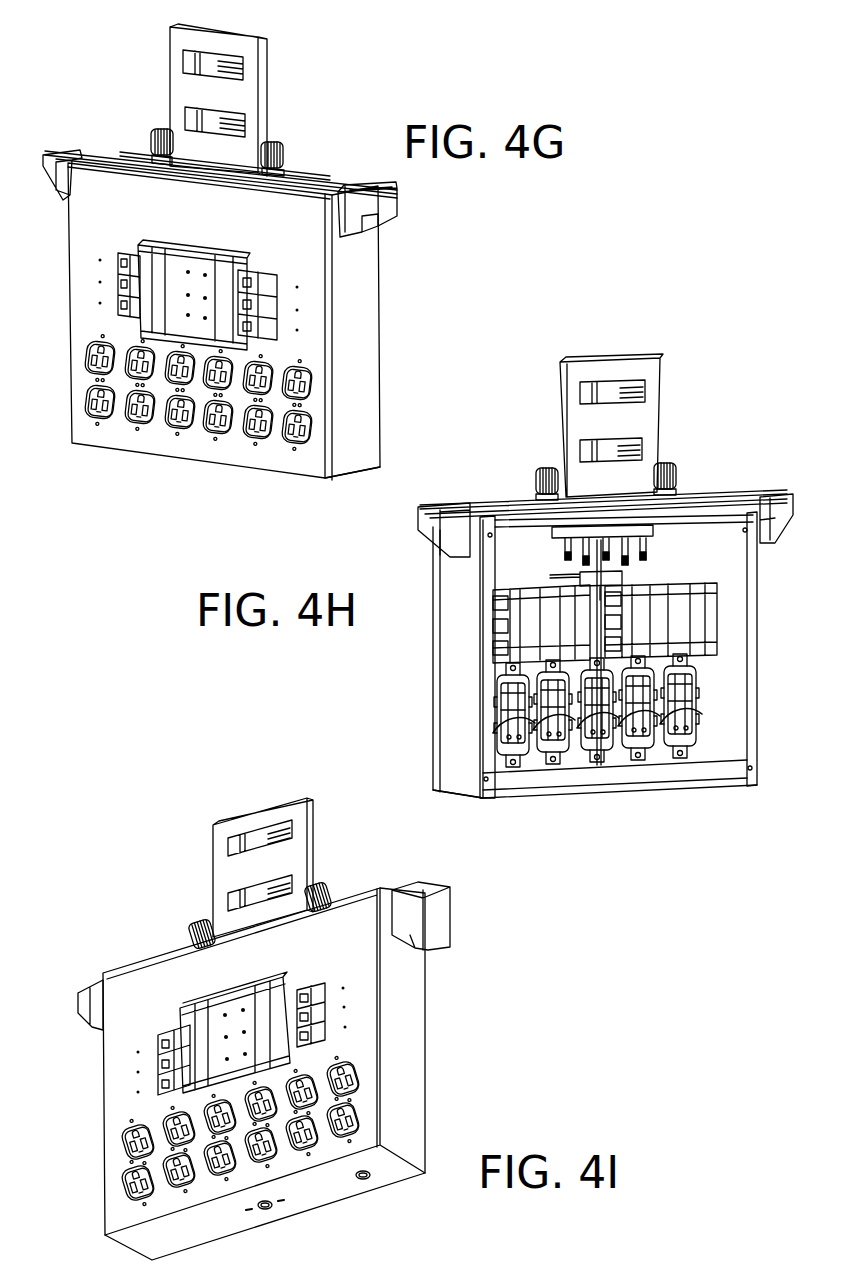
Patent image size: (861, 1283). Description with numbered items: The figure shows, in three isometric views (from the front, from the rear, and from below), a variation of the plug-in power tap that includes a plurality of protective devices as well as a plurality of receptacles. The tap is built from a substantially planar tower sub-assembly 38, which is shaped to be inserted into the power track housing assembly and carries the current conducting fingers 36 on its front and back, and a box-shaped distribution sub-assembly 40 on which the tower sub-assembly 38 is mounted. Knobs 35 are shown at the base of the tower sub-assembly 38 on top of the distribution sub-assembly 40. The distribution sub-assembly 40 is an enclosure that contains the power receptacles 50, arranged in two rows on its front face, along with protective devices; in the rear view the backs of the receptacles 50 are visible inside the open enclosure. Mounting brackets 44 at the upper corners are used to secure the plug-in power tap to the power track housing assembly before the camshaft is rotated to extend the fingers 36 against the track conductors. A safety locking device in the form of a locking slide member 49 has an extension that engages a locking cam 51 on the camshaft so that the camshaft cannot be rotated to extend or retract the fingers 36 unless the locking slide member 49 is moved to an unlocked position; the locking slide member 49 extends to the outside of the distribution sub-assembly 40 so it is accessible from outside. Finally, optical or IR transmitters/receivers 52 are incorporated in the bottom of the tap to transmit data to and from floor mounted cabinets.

In FIG. 4G, the thumb screw knob 35 is at (158, 130).
In FIG. 4H, the thumb screw knob 35 is at (545, 468).
In FIG. 4I, the thumb screw knob 35 is at (197, 926).
In FIG. 4G, the current conducting fingers 36 is at (233, 115).
In FIG. 4H, the current conducting fingers 36 is at (633, 437).
In FIG. 4I, the current conducting fingers 36 is at (277, 880).
In FIG. 4G, the tower sub-assembly 38 is at (182, 83).
In FIG. 4H, the tower sub-assembly 38 is at (580, 415).
In FIG. 4I, the tower sub-assembly 38 is at (223, 875).
In FIG. 4G, the distribution sub-assembly 40 is at (360, 345).
In FIG. 4H, the distribution sub-assembly 40 is at (455, 660).
In FIG. 4I, the distribution sub-assembly 40 is at (398, 1010).
In FIG. 4G, the mounting bracket 44 is at (63, 198).
In FIG. 4H, the mounting bracket 44 is at (452, 502).
In FIG. 4I, the mounting bracket 44 is at (92, 1000).
In FIG. 4G, the locking slide member 49 is at (135, 257).
In FIG. 4H, the locking slide member 49 is at (580, 575).
In FIG. 4G, the receptacles 50 is at (88, 393).
In FIG. 4H, the receptacles 50 is at (488, 732).
In FIG. 4I, the receptacles 50 is at (363, 1110).
In FIG. 4H, the locking cam 51 is at (622, 580).
In FIG. 4I, the optical or IR transmitters/receivers 52 is at (372, 1180).